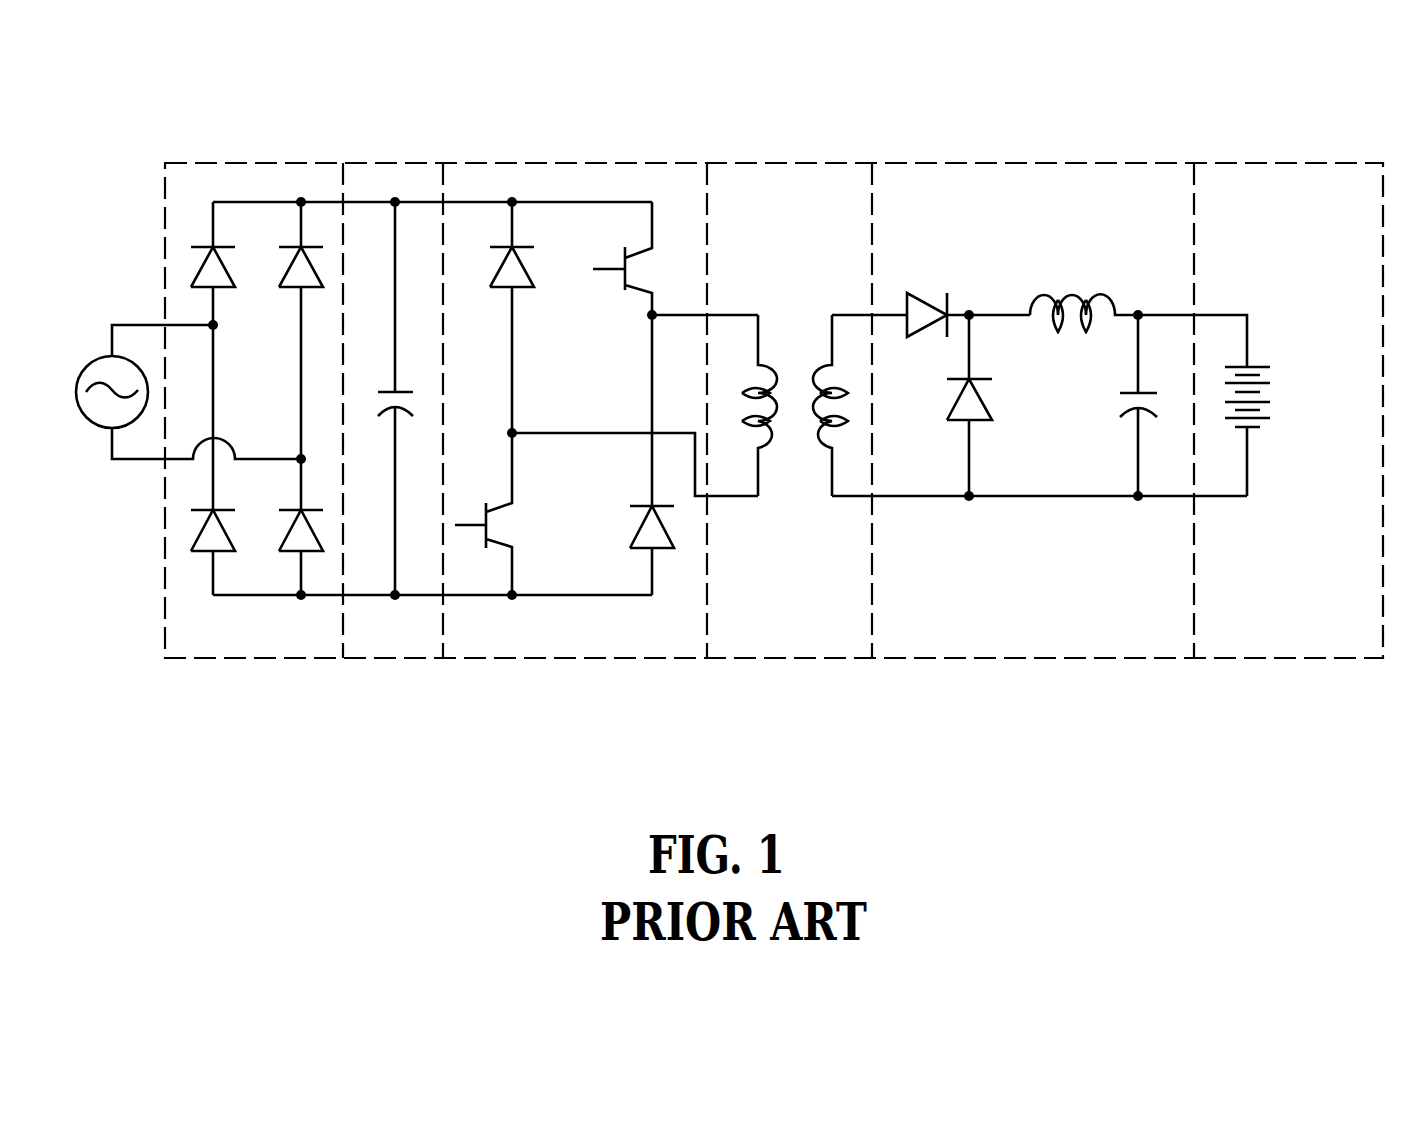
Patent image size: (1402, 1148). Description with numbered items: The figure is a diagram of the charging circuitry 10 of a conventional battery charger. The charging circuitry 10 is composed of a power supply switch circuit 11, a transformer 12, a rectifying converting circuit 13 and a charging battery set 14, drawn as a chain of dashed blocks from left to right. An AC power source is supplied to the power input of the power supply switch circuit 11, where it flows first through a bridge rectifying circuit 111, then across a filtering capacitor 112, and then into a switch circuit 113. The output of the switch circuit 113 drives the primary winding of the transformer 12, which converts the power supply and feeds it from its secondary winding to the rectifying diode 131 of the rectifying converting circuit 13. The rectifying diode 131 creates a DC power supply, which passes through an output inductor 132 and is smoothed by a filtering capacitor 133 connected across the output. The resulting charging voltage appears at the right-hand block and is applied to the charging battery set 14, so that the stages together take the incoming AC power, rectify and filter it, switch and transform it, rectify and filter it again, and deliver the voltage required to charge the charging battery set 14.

The charging circuitry 10 is at (148, 152).
The power supply switch circuit 11 is at (416, 155).
The bridge rectifying circuit 111 is at (248, 173).
The filtering capacitor 112 is at (379, 175).
The switch circuit 113 is at (563, 185).
The transformer 12 is at (775, 190).
The rectifying converting circuit 13 is at (997, 175).
The rectifying diode 131 is at (930, 290).
The output inductor 132 is at (1067, 290).
The filtering capacitor 133 is at (1113, 400).
The charging battery set 14 is at (1270, 180).